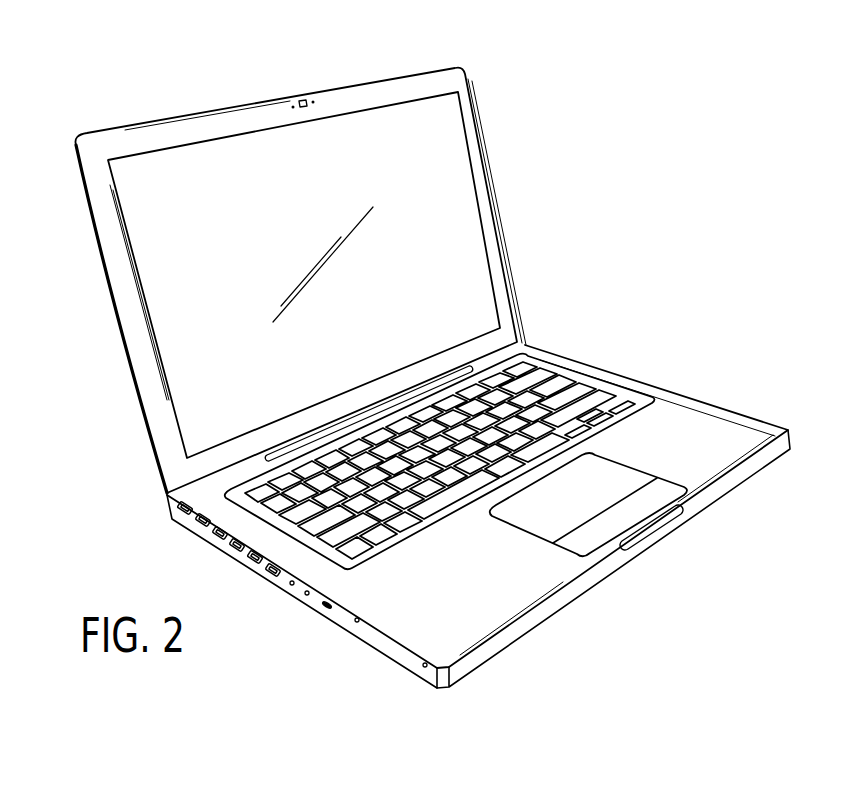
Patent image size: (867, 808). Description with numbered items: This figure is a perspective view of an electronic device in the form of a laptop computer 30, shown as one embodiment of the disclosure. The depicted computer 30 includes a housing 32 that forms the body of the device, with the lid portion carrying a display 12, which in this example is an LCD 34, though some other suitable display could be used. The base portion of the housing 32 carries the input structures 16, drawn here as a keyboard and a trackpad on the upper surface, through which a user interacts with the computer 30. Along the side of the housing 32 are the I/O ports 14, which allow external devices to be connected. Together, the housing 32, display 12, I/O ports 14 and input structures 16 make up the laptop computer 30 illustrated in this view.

The laptop computer 30 is at (221, 82).
The display 12 is at (464, 223).
The LCD 34 is at (453, 118).
The housing 32 is at (660, 387).
The input structures 16 is at (585, 383).
The I/O ports 14 is at (253, 563).